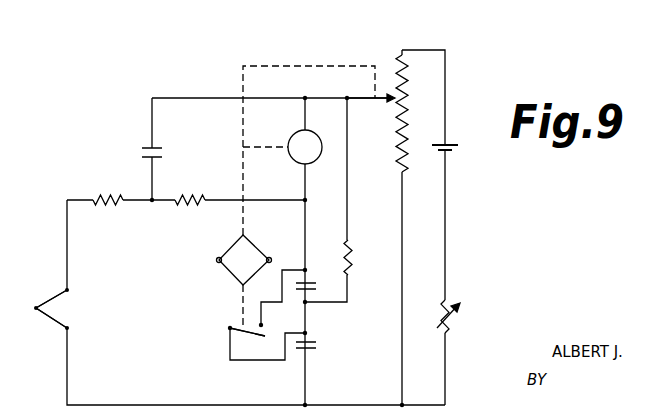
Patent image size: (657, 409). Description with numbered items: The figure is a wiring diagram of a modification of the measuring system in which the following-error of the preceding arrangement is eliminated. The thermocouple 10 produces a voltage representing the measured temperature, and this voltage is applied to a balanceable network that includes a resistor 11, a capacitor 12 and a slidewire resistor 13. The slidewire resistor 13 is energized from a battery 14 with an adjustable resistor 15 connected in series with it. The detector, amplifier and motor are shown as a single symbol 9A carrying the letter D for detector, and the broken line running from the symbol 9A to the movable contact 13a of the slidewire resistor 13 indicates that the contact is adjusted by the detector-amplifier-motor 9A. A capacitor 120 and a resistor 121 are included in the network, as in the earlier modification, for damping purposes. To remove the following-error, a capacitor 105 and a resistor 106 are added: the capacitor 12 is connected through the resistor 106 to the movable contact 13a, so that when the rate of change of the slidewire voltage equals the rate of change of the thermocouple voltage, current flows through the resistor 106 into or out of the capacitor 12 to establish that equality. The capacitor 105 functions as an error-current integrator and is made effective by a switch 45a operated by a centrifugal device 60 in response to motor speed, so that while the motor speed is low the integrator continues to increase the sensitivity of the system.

The thermocouple 10 is at (52, 299).
The resistor 11 is at (93, 196).
The capacitor 120 is at (143, 150).
The resistor 121 is at (188, 196).
The detector-amplifier-motor 9A is at (289, 137).
The movable contact 13a is at (383, 105).
The slidewire resistor 13 is at (401, 153).
The battery 14 is at (458, 141).
The adjustable resistor 15 is at (452, 327).
The centrifugal device 60 is at (223, 251).
The switch 45a is at (231, 326).
The capacitor 105 is at (315, 288).
The resistor 106 is at (352, 262).
The capacitor 12 is at (320, 345).